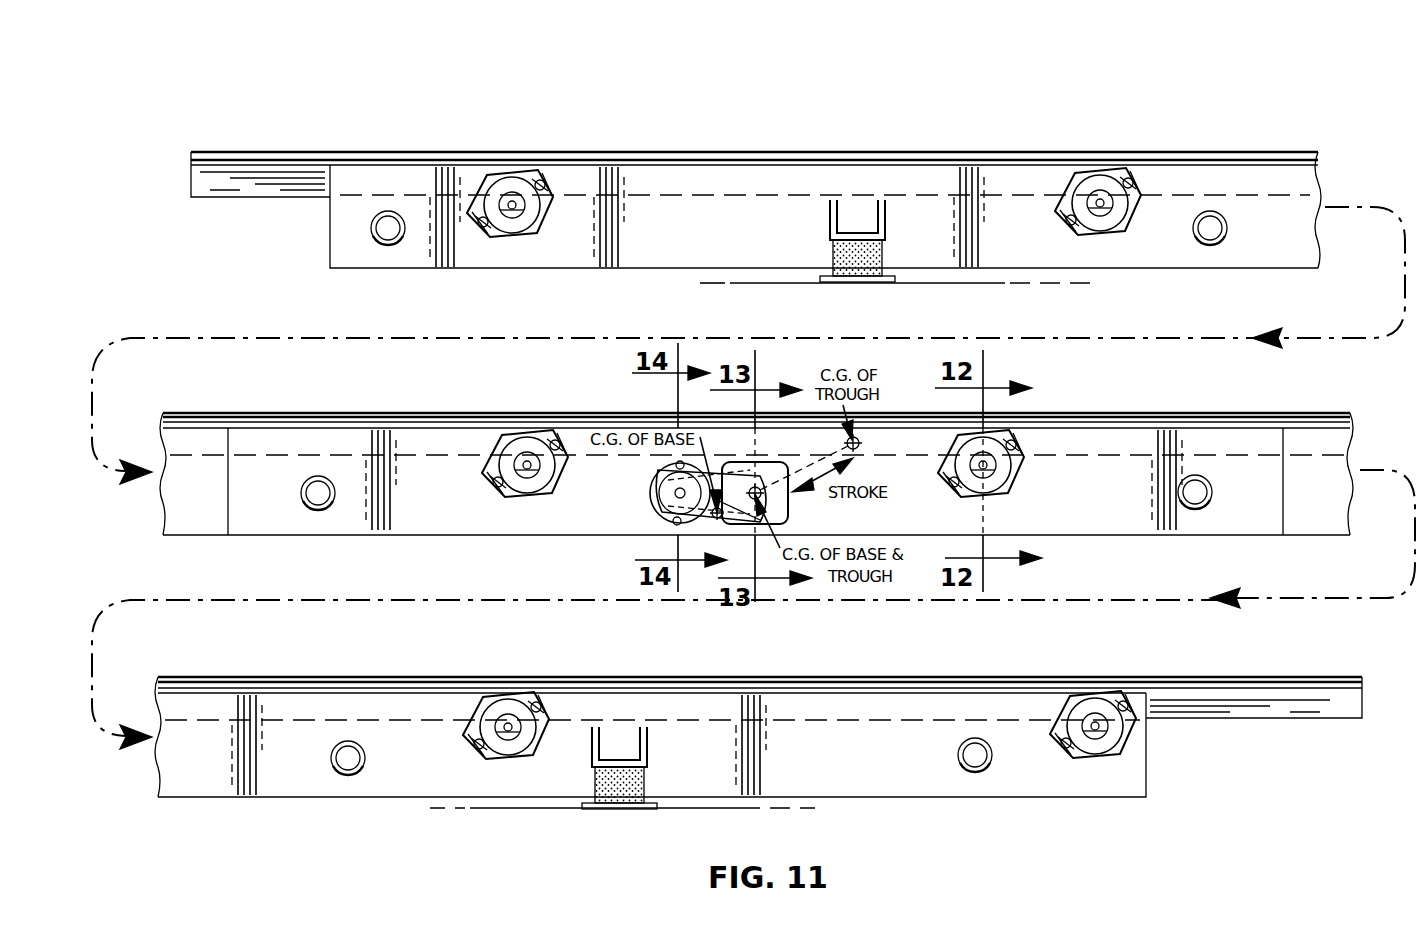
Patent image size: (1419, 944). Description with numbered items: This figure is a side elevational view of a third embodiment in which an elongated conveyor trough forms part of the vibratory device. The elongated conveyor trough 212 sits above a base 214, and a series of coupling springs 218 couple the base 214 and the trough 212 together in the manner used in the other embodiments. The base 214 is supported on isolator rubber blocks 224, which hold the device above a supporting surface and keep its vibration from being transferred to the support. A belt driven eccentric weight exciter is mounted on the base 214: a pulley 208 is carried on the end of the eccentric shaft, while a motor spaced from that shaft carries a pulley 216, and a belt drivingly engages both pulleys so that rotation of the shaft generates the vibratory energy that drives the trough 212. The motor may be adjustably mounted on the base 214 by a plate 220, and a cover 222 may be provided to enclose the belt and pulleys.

The conveyor trough 212 is at (340, 157).
The base 214 is at (647, 255).
The coupling springs 218 is at (525, 178).
The isolator rubber blocks 224 is at (835, 262).
The pulley 208 is at (687, 510).
The pulley 216 is at (651, 488).
The plate 220 is at (656, 500).
The cover 222 is at (672, 518).